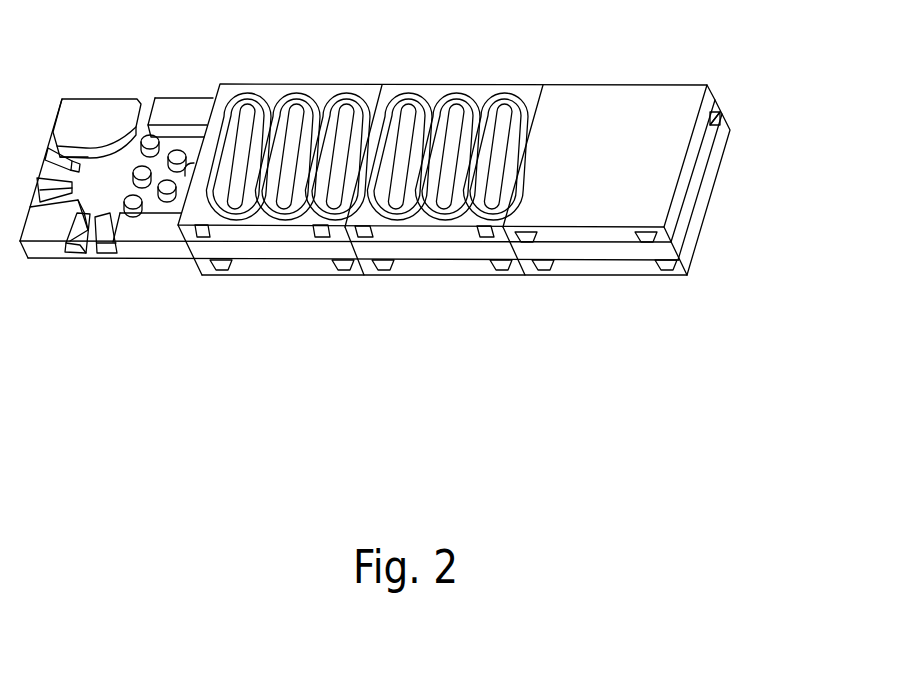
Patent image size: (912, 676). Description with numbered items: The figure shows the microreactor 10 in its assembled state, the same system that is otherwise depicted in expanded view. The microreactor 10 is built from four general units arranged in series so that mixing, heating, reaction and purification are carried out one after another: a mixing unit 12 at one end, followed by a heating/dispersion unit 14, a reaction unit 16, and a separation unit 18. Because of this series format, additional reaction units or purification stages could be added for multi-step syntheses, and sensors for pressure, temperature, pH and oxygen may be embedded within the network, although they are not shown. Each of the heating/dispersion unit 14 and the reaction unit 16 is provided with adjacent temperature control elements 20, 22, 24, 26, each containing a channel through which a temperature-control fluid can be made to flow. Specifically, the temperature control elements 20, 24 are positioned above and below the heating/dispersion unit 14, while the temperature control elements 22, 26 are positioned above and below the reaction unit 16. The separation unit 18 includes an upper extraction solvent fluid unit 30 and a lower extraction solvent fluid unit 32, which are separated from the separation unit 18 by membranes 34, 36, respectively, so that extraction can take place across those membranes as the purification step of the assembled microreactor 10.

The microreactor 10 is at (178, 53).
The mixing unit 12 is at (130, 255).
The heating/dispersion unit 14 is at (206, 253).
The reaction unit 16 is at (402, 253).
The separation unit 18 is at (592, 253).
The temperature control element 20 is at (276, 82).
The temperature control element 22 is at (474, 85).
The temperature control element 24 is at (304, 270).
The temperature control element 26 is at (485, 272).
The upper extraction solvent fluid unit 30 is at (642, 90).
The lower extraction solvent fluid unit 32 is at (716, 178).
The membrane 34 is at (713, 99).
The membrane 36 is at (722, 119).